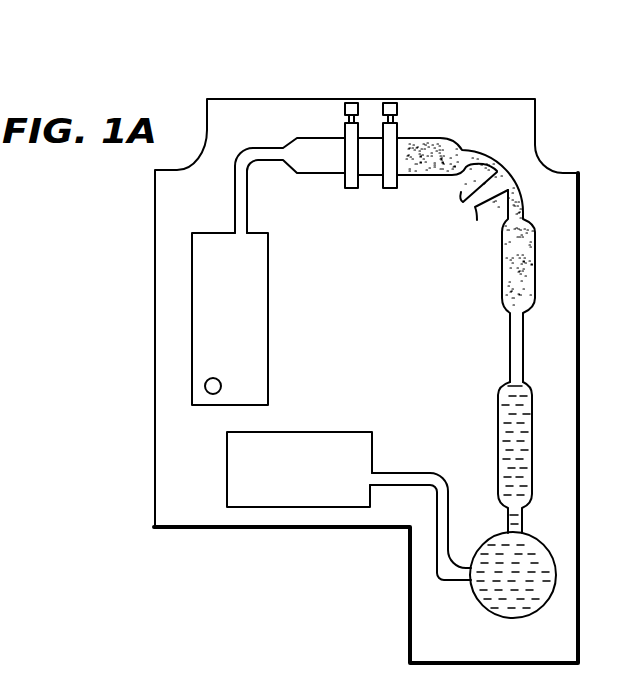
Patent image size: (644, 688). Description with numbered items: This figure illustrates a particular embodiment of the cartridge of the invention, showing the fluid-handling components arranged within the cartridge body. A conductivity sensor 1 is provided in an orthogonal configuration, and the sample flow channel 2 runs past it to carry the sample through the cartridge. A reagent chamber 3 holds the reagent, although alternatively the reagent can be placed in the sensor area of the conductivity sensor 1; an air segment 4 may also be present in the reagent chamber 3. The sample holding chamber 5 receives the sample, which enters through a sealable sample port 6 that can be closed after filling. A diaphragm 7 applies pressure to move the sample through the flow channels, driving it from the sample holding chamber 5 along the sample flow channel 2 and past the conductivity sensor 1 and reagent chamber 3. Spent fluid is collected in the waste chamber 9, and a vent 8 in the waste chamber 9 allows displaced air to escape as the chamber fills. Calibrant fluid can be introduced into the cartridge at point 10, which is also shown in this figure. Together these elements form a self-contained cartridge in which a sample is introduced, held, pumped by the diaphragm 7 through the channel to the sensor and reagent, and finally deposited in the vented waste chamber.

The conductivity sensor 1 is at (353, 102).
The sample flow channel 2 is at (433, 145).
The reagent chamber 3 is at (512, 232).
The air segment 4 is at (525, 297).
The sample holding chamber 5 is at (498, 440).
The sealable sample port 6 is at (556, 573).
The diaphragm 7 is at (283, 503).
The vent 8 is at (209, 394).
The waste chamber 9 is at (257, 340).
The calibrant fluid introduction point 10 is at (458, 211).